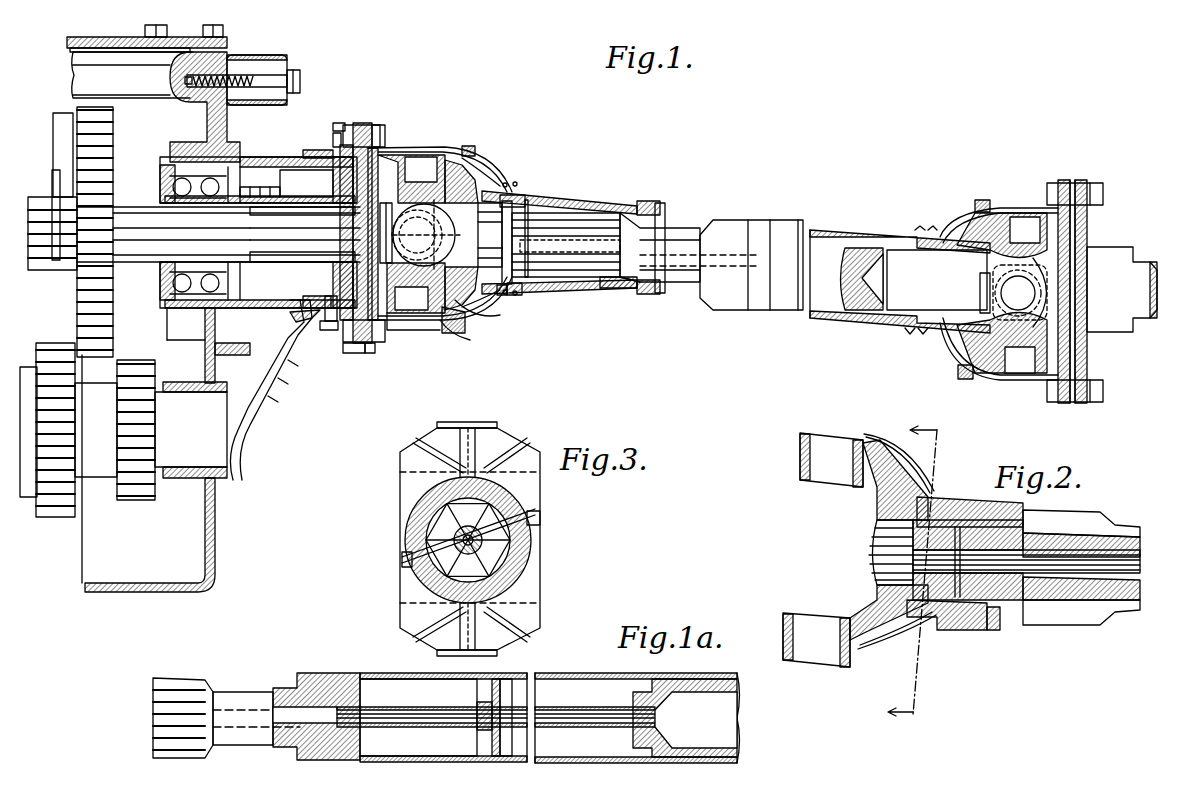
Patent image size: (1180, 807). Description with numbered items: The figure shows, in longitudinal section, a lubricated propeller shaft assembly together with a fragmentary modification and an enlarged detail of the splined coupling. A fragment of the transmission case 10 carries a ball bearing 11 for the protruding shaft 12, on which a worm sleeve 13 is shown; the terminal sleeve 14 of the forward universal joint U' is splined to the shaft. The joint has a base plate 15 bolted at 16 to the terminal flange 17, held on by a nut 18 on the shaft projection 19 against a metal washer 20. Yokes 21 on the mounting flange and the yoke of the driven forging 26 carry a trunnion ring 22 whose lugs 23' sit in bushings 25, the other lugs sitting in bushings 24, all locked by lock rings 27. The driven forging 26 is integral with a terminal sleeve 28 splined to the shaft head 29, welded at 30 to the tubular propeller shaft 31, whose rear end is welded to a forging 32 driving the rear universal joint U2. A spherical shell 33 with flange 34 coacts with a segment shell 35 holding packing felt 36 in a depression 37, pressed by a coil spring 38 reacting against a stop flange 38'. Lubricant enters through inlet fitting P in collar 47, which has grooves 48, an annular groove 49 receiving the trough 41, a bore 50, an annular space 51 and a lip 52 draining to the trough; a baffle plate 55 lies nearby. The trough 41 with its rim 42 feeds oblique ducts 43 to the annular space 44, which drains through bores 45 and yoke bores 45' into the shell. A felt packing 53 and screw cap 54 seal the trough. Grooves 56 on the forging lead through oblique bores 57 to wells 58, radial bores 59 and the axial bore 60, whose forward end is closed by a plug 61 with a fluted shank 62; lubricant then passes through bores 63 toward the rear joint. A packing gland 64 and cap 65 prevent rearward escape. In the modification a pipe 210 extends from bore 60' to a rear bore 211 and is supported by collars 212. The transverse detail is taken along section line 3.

In FIG. 1, the gear or transmission case 10 is at (217, 120).
In FIG. 1, the ball bearing 11 is at (168, 185).
In FIG. 1, the protruding shaft 12 is at (255, 229).
In FIG. 1, the worm sleeve 13 is at (260, 190).
In FIG. 1, the terminal sleeve 14 is at (312, 150).
In FIG. 1, the annular mounting or base plate 15 is at (385, 150).
In FIG. 1, the bolts 16 is at (346, 145).
In FIG. 1, the terminal flange 17 is at (358, 123).
In FIG. 1, the nut 18 is at (426, 235).
In FIG. 1, the shaft projection 19 is at (387, 225).
In FIG. 1, the metal washer 20 is at (405, 170).
In FIG. 1, the yokes 21 is at (465, 320).
In FIG. 1, the trunnion ring 22 is at (470, 148).
In FIG. 1, the bearing lugs 23' is at (482, 118).
In FIG. 1, the bushings 24 is at (515, 200).
In FIG. 1, the bushings 25 is at (460, 160).
In FIG. 1, the driven forging 26 is at (500, 190).
In FIG. 3, the driven forging 26 is at (412, 452).
In FIG. 2, the driven forging 26 is at (875, 500).
In FIG. 1, the lock rings 27 is at (450, 162).
In FIG. 2, the lock rings 27 is at (800, 465).
In FIG. 1, the terminal sleeve 28 is at (560, 200).
In FIG. 1, the splined shaft head 29 is at (680, 228).
In FIG. 2, the splined shaft head 29 is at (1120, 537).
In FIG. 1A, the splined shaft head 29 is at (240, 700).
In FIG. 1, the weld 30 is at (760, 220).
In FIG. 1A, the weld 30 is at (340, 760).
In FIG. 1, the tubular propeller shaft 31 is at (812, 227).
In FIG. 1A, the tubular propeller shaft 31 is at (470, 676).
In FIG. 1, the rear forging 32 is at (965, 215).
In FIG. 1, the spherical sheet metal shell 33 is at (415, 318).
In FIG. 1, the flange 34 is at (378, 125).
In FIG. 1, the spherical segment shell member 35 is at (475, 335).
In FIG. 1, the annular packing felt 36 is at (500, 150).
In FIG. 1, the annular depression 37 is at (445, 332).
In FIG. 1, the coil spring 38 is at (538, 297).
In FIG. 1, the stop flange 38' is at (517, 295).
In FIG. 1, the flanged trough 41 is at (360, 345).
In FIG. 1, the annular rim or enlargement 42 is at (285, 292).
In FIG. 1, the oblique ducts 43 is at (395, 320).
In FIG. 1, the flat annular space 44 is at (360, 353).
In FIG. 1, the bores 45 is at (396, 378).
In FIG. 1, the yoke bores 45' is at (336, 124).
In FIG. 1, the collar 47 is at (275, 390).
In FIG. 1, the grooves 48 is at (290, 246).
In FIG. 1, the annular groove 49 is at (336, 123).
In FIG. 1, the bore 50 is at (300, 318).
In FIG. 1, the annular space 51 is at (300, 260).
In FIG. 1, the lip 52 is at (335, 262).
In FIG. 1, the annular felt packing 53 is at (330, 322).
In FIG. 1, the screw cap 54 is at (336, 330).
In FIG. 1, the baffle plate 55 is at (260, 184).
In FIG. 1, the longitudinal grooves 56 is at (505, 180).
In FIG. 3, the longitudinal grooves 56 is at (475, 440).
In FIG. 2, the longitudinal grooves 56 is at (895, 470).
In FIG. 1, the oblique bore 57 is at (530, 200).
In FIG. 3, the oblique bore 57 is at (520, 488).
In FIG. 2, the oblique bore 57 is at (945, 505).
In FIG. 1, the well or depression 58 is at (610, 290).
In FIG. 2, the well or depression 58 is at (993, 630).
In FIG. 1, the radial bores 59 is at (620, 200).
In FIG. 3, the radial bores 59 is at (430, 515).
In FIG. 2, the radial bores 59 is at (880, 545).
In FIG. 1, the axial bore 60 is at (640, 290).
In FIG. 2, the axial bore 60 is at (1026, 606).
In FIG. 1A, the bore 60' is at (492, 684).
In FIG. 3, the metal plug 61 is at (454, 538).
In FIG. 2, the metal plug 61 is at (915, 562).
In FIG. 3, the fluted shank 62 is at (482, 540).
In FIG. 2, the fluted shank 62 is at (1010, 560).
In FIG. 1, the bores 63 is at (870, 310).
In FIG. 1, the packing gland 64 is at (670, 220).
In FIG. 1, the cap 65 is at (650, 296).
In FIG. 1A, the pipe 210 is at (455, 750).
In FIG. 1A, the bore 211 is at (660, 718).
In FIG. 1A, the collars 212 is at (500, 695).
In FIG. 2, the section line 3— 3 is at (922, 573).
In FIG. 1, the forward universal joint U' is at (443, 128).
In FIG. 1, the rear universal joint U2 is at (1057, 283).